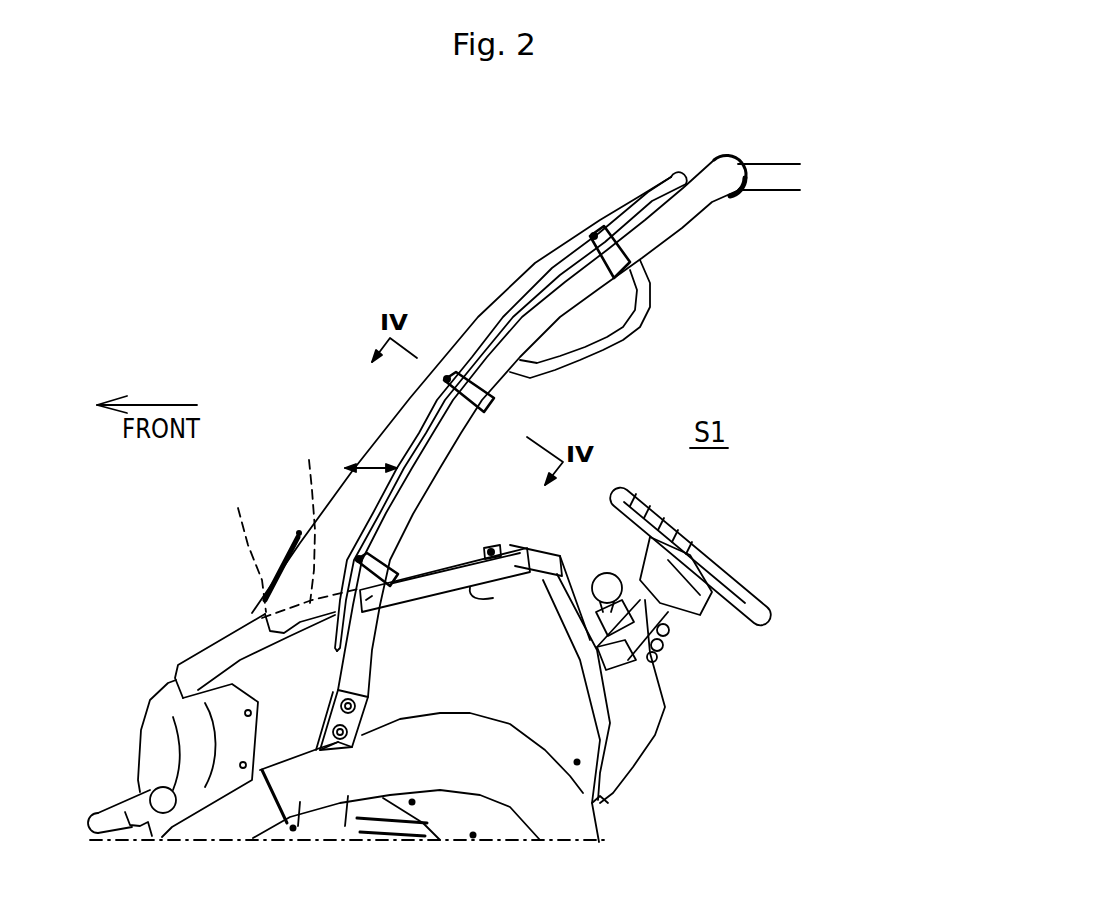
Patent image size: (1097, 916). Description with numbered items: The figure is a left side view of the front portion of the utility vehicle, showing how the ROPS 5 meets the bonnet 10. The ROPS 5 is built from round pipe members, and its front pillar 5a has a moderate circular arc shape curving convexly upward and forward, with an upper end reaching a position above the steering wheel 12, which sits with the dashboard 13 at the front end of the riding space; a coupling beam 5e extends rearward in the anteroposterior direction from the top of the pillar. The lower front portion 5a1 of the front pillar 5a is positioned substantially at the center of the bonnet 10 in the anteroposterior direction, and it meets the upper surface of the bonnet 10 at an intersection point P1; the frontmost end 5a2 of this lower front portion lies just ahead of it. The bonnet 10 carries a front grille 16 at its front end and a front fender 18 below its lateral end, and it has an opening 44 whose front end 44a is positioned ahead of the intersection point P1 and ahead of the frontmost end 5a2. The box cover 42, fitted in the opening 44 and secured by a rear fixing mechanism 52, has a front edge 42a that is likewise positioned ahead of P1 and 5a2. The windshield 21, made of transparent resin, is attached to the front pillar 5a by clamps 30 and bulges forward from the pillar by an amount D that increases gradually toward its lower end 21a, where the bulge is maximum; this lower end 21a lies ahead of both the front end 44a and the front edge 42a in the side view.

The ROPS 5 is at (705, 150).
The coupling beam 5e is at (763, 173).
The front pillar 5a is at (552, 310).
The lower front portion 5a1 is at (362, 692).
The frontmost end 5a2 is at (335, 742).
The windshield 21 is at (408, 412).
The lower end 21a is at (260, 618).
The clamp 30 is at (482, 400).
The box cover 42 is at (427, 572).
The front edge 42a is at (312, 523).
The opening 44 is at (493, 598).
The front end 44a is at (258, 543).
The rear fixing mechanism 52 is at (505, 521).
The bonnet 10 is at (248, 641).
The steering wheel 12 is at (693, 556).
The dashboard 13 is at (633, 725).
The front grille 16 is at (153, 745).
The front fender 18 is at (543, 797).
The intersection point P1 is at (368, 598).
The bulging amount D is at (371, 453).